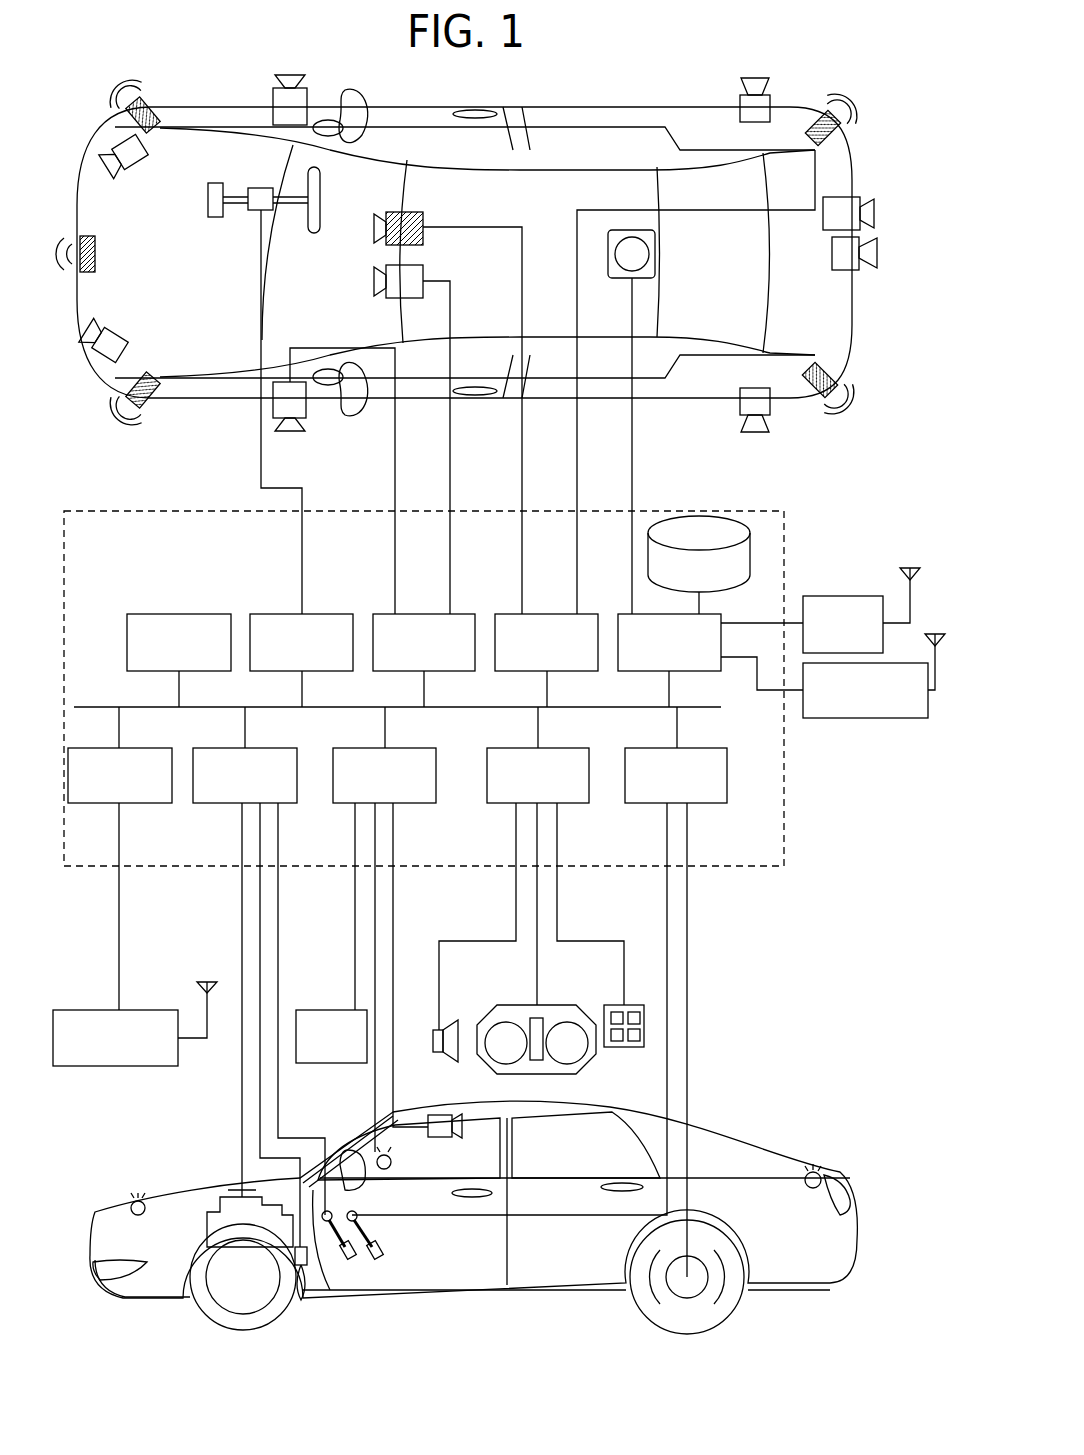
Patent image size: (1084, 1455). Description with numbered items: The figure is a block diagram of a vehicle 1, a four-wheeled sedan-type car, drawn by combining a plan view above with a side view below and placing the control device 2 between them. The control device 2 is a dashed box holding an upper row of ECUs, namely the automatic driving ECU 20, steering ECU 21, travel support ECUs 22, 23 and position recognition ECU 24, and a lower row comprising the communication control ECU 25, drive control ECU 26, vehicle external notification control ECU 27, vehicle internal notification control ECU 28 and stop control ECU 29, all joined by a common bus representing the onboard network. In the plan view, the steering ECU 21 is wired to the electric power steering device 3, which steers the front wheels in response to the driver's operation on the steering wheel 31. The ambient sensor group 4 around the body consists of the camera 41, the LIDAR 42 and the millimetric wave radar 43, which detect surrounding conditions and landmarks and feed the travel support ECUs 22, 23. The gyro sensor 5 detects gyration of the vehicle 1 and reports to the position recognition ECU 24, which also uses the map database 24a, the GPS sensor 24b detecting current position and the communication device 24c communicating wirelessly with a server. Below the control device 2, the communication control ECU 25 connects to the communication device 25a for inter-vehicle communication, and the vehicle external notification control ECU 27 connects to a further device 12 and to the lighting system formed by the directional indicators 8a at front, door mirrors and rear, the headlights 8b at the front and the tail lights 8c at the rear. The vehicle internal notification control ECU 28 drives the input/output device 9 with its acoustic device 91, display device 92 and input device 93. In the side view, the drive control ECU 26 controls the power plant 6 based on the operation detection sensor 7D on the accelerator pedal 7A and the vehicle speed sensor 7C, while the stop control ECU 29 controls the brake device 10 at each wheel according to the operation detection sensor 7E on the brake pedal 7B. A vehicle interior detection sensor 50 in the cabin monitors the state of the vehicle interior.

The vehicle 1 is at (866, 180).
The control device 2 is at (753, 870).
The electric power steering device 3 is at (216, 217).
The steering wheel 31 is at (313, 233).
The external sensor group 4 is at (105, 118).
The camera 41 is at (270, 100).
The LIDAR 42 is at (135, 175).
The millimetric wave radar 43 is at (150, 130).
The gyro sensor 5 is at (656, 250).
The power plant 6 is at (216, 1197).
The accelerator pedal 7A is at (360, 1263).
The brake pedal 7B is at (383, 1252).
The vehicle speed sensor 7C is at (302, 1290).
The operation detection sensor 7D is at (330, 1210).
The operation detection sensor 7E is at (358, 1215).
The directional indicators 8a is at (130, 1205).
The headlights 8b is at (105, 1268).
The tail lights 8c is at (845, 1217).
The input/output device 9 is at (532, 954).
The acoustic device 91 is at (436, 1030).
The display device 92 is at (480, 1030).
The input device 93 is at (630, 1050).
The brake device 10 is at (697, 1298).
The brake device 12 is at (316, 1010).
The automatic driving ECU 20 is at (208, 614).
The steering ECU 21 is at (330, 614).
The travel support ECU 22 is at (423, 614).
The travel support ECU 23 is at (548, 614).
The position recognition ECU 24 is at (617, 614).
The database 24a is at (697, 518).
The GPS sensor 24b is at (842, 596).
The communication device 24c is at (843, 718).
The communication control ECU 25 is at (148, 805).
The communication device 25a is at (112, 1068).
The drive control ECU 26 is at (218, 805).
The vehicle external notification control ECU 27 is at (420, 805).
The vehicle internal notification control ECU 28 is at (575, 805).
The stop control ECU 29 is at (713, 805).
The vehicle interior detection sensor 50 is at (452, 1137).